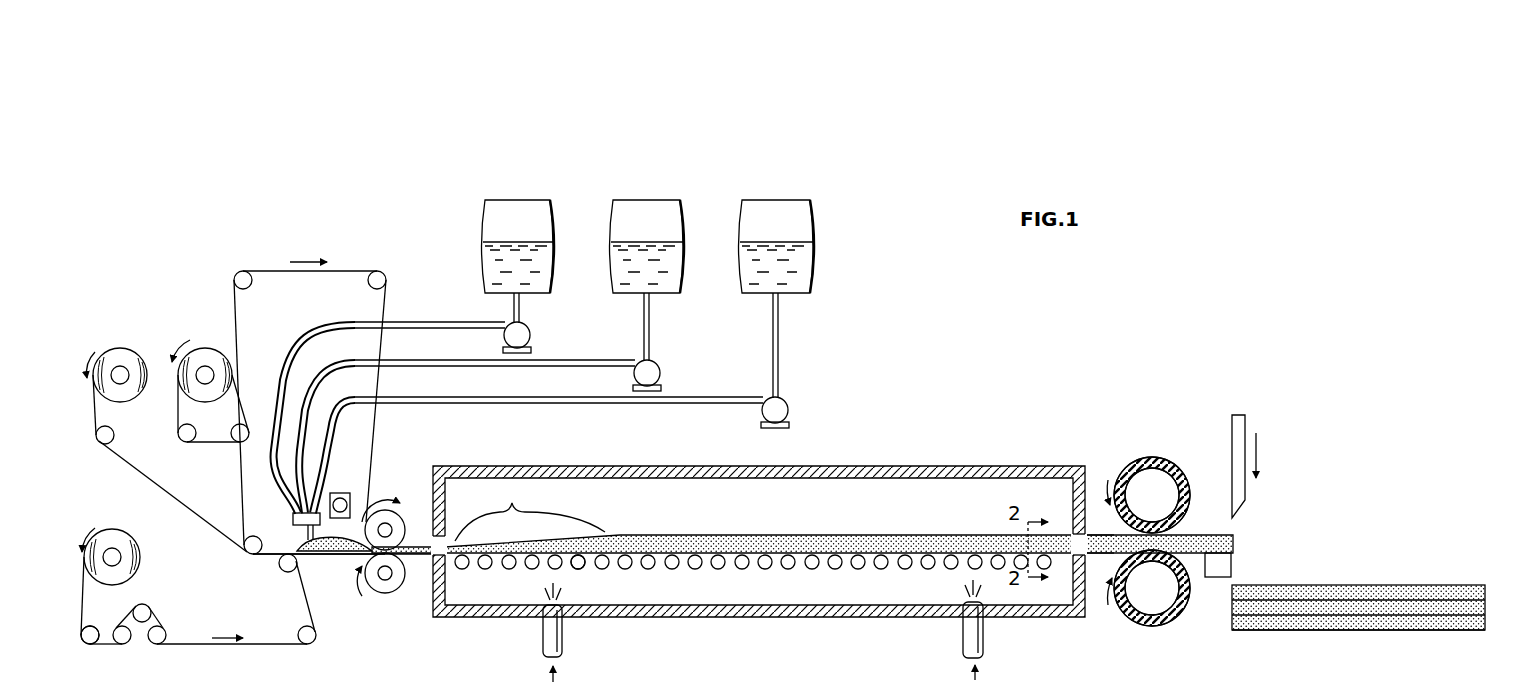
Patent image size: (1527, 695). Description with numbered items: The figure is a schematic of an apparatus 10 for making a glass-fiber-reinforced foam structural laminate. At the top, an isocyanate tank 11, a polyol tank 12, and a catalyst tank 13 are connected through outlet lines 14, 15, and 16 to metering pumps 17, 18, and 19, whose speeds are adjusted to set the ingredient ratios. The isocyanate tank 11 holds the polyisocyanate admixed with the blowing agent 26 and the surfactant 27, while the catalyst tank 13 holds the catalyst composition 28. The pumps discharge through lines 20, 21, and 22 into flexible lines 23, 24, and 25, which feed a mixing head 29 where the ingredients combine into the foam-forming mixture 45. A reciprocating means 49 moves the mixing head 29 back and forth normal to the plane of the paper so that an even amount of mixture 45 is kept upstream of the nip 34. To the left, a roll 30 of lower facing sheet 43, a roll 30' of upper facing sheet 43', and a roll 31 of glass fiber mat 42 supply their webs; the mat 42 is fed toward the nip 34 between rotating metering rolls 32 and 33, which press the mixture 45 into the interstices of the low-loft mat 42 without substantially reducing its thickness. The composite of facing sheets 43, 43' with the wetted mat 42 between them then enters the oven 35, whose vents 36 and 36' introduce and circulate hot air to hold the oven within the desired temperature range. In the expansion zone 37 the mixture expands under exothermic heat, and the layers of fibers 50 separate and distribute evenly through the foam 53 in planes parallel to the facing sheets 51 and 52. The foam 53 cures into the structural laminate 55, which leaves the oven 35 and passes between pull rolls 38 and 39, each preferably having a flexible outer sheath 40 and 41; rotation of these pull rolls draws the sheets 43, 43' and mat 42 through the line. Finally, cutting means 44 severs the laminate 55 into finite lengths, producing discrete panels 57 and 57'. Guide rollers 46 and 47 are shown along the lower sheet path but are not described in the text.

The apparatus 10 is at (900, 385).
The isocyanate tank 11 is at (548, 208).
The polyol tank 12 is at (680, 208).
The catalyst tank 13 is at (810, 210).
The outlet line 14 is at (521, 305).
The outlet line 15 is at (651, 315).
The outlet line 16 is at (780, 316).
The metering pump 17 is at (531, 333).
The metering pump 18 is at (660, 366).
The metering pump 19 is at (786, 400).
The line 20 is at (438, 321).
The line 21 is at (442, 359).
The line 22 is at (474, 396).
The flexible line 23 is at (312, 334).
The flexible line 24 is at (342, 368).
The flexible line 25 is at (333, 418).
The blowing agent 26 is at (490, 262).
The surfactant 27 is at (620, 262).
The catalyst composition 28 is at (750, 262).
The mixing head 29 is at (292, 518).
The roll of lower facing sheet material 30 is at (112, 564).
The roll of upper facing sheet material 30' is at (210, 376).
The roll of glass fiber mat material 31 is at (140, 350).
The metering roll 32 is at (394, 511).
The metering roll 33 is at (400, 594).
The nip 34 is at (349, 590).
The oven 35 is at (928, 466).
The vent 36 is at (576, 632).
The vent 36' is at (1001, 630).
The expansion zone 37 is at (530, 511).
The pull roll 38 is at (1150, 478).
The pull roll 39 is at (1142, 605).
The flexible outer sheath 40 is at (1176, 468).
The flexible outer sheath 41 is at (1175, 615).
The glass fiber mat 42 is at (172, 492).
The lower facing sheet 43 is at (263, 599).
The upper facing sheet 43' is at (328, 408).
The cutting means 44 is at (1245, 420).
The foam-forming mixture 45 is at (335, 552).
The guide roller 46 is at (97, 627).
The guide roller 47 is at (146, 605).
The reciprocating means 49 is at (334, 492).
The layers of fibers 50 is at (470, 569).
The facing sheet 51 is at (516, 569).
The facing sheet 52 is at (520, 540).
The foam 53 is at (574, 569).
The structural laminate 55 is at (1092, 532).
The discrete panel 57 is at (1358, 589).
The discrete panel 57' is at (1358, 650).